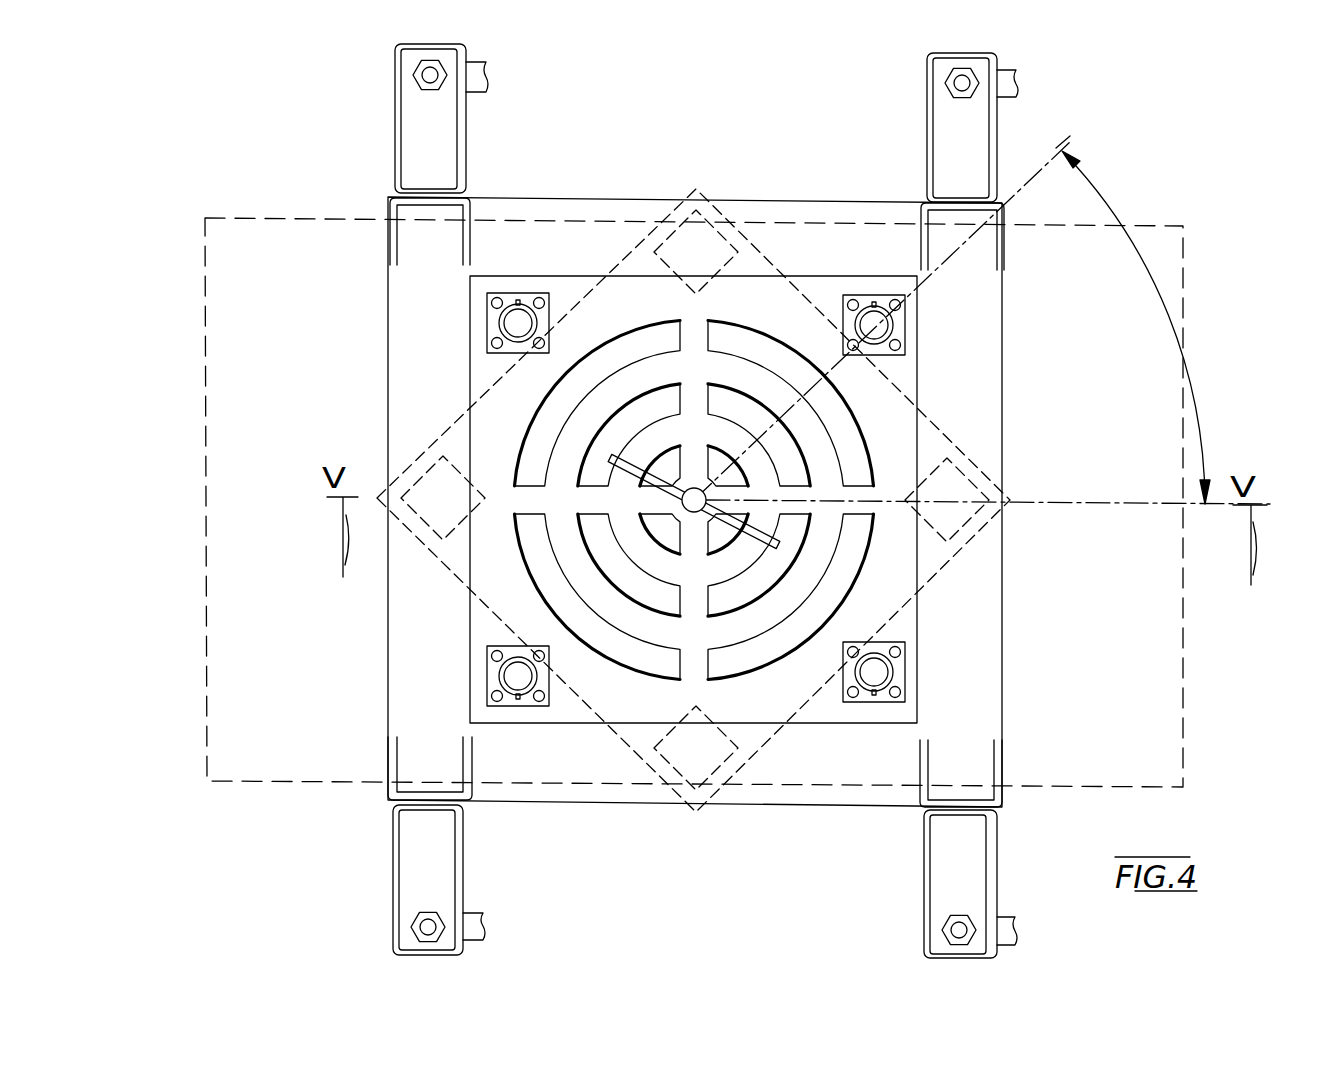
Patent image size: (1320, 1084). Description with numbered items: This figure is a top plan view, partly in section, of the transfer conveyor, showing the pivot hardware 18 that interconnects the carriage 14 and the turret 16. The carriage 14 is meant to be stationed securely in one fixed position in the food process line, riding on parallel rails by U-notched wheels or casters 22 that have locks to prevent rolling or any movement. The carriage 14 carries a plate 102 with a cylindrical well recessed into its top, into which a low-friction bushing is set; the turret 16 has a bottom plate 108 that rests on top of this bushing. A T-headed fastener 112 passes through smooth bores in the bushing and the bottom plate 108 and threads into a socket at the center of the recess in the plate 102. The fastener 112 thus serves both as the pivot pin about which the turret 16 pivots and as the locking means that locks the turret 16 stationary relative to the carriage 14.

The carriage 14 is at (467, 143).
The turret 16 is at (203, 603).
The pivot hardware 18 is at (693, 513).
The U-notched wheels or casters 22 is at (478, 913).
The plate 102 is at (970, 381).
The bottom plate 108 is at (449, 432).
The T-headed fastener 112 is at (628, 470).